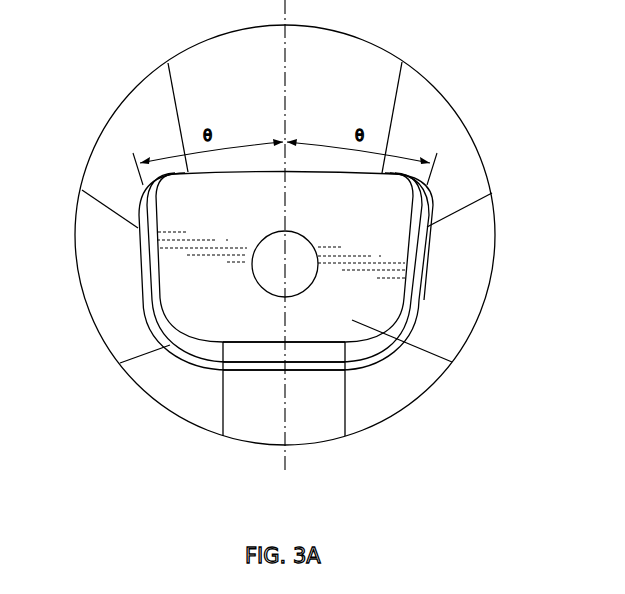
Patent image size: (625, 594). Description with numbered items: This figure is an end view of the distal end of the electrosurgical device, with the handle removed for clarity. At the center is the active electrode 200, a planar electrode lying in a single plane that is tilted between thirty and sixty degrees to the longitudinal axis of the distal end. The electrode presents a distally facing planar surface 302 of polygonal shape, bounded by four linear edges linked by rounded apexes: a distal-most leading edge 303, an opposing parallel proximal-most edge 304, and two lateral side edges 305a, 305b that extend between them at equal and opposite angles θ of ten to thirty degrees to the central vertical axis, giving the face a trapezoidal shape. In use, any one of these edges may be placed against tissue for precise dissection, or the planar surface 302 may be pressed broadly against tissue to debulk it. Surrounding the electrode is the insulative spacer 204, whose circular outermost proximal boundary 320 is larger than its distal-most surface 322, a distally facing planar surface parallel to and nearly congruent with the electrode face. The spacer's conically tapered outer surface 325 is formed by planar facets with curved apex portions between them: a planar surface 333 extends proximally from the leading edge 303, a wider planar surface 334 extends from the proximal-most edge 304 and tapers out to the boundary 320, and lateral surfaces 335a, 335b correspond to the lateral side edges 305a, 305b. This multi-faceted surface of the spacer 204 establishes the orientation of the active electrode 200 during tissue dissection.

The active electrode 200 is at (380, 343).
The insulative spacer 204 is at (482, 225).
The planar surface 302 is at (183, 272).
The leading edge 303 is at (268, 353).
The proximal-most edge 304 is at (317, 172).
The lateral side edge 305a is at (413, 277).
The lateral side edge 305b is at (140, 277).
The outermost proximal boundary 320 is at (458, 117).
The distal-most surface 322 is at (388, 320).
The outer surface 325 is at (138, 112).
The planar surface 333 is at (316, 432).
The planar surface 334 is at (352, 62).
The lateral surface 335a is at (460, 337).
The lateral surface 335b is at (110, 339).